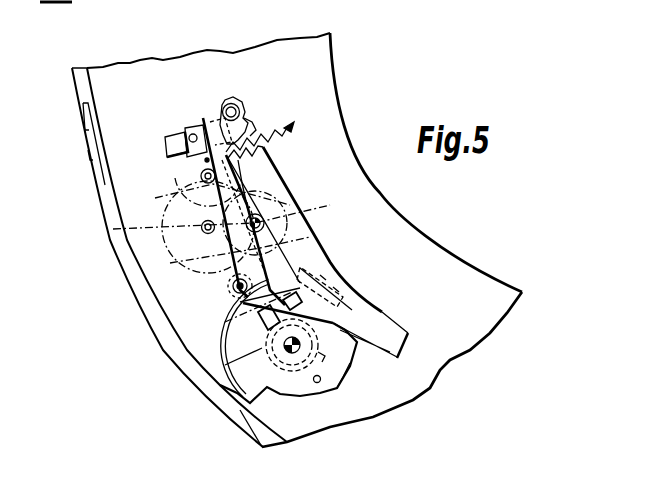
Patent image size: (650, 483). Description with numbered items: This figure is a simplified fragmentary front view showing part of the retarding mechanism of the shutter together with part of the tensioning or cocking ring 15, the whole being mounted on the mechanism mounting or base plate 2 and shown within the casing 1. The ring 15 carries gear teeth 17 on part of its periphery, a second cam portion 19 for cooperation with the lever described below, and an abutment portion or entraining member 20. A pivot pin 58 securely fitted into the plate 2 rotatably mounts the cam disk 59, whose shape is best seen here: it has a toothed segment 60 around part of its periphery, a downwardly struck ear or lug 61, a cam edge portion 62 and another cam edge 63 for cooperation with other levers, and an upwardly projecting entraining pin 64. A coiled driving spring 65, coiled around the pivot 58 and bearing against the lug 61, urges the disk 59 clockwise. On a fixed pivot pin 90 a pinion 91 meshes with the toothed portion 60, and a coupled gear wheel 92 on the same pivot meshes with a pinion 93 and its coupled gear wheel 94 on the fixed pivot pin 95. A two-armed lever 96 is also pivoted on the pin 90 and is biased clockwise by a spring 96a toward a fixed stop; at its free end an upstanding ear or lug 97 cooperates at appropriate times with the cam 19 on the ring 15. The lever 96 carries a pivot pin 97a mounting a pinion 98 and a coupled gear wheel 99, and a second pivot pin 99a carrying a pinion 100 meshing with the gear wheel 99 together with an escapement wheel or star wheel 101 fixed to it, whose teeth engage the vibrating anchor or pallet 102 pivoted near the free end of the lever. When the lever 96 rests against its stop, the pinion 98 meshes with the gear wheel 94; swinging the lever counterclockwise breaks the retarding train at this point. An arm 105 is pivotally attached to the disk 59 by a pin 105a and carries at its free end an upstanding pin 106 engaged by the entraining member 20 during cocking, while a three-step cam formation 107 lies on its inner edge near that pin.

The housing 1 is at (113, 93).
The base plate 2 is at (243, 420).
The tensioning or cocking ring 15 is at (430, 353).
The gear teeth 17 is at (392, 360).
The second cam portion 19 is at (282, 182).
The abutment portion or entraining member 20 is at (318, 262).
The pivot pin 58 is at (250, 400).
The cam disk 59 is at (345, 365).
The toothed segment 60 is at (285, 350).
The ear or lug 61 is at (268, 333).
The cam edge portion 62 is at (367, 313).
The cam edge 63 is at (285, 392).
The entraining pin 64 is at (317, 385).
The coiled driving spring 65 is at (225, 365).
The pivot pin 90 is at (240, 302).
The pinion 91 is at (232, 287).
The gear wheel 92 is at (225, 322).
The pinion 93 is at (264, 218).
The gear wheel 94 is at (264, 228).
The pivot pin 95 is at (258, 198).
The two-armed lever 96 is at (193, 185).
The spring 96a is at (267, 137).
The upstanding ear or lug 97 is at (218, 163).
The pivot pin 97a is at (225, 257).
The pinion 98 is at (200, 233).
The gear wheel 99 is at (113, 229).
The second pivot pin 99a is at (205, 197).
The pinion 100 is at (201, 177).
The escapement wheel or star wheel 101 is at (203, 160).
The vibrating anchor or pallet 102 is at (165, 138).
The arm 105 is at (228, 100).
The pin 105a is at (347, 303).
The upstanding pin 106 is at (235, 106).
The cam formation 107 is at (250, 120).